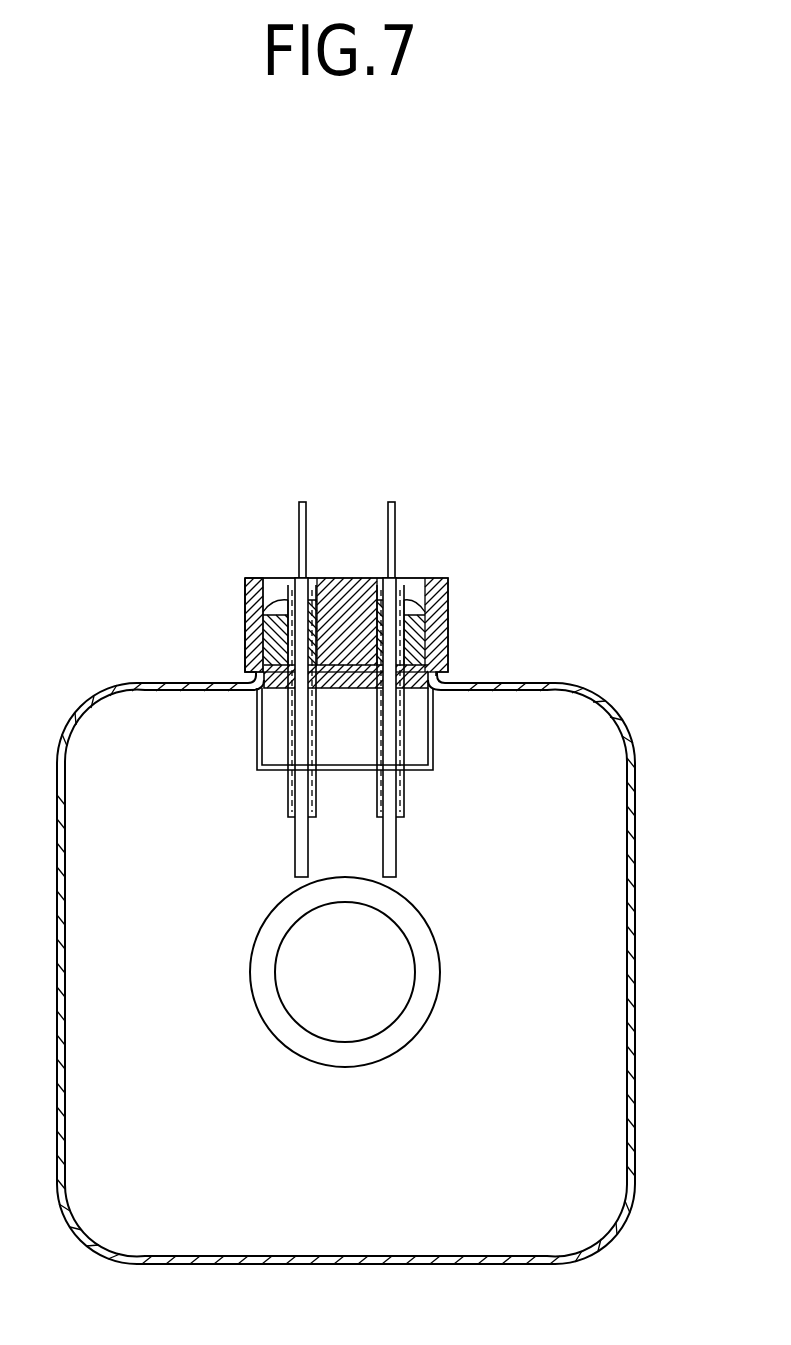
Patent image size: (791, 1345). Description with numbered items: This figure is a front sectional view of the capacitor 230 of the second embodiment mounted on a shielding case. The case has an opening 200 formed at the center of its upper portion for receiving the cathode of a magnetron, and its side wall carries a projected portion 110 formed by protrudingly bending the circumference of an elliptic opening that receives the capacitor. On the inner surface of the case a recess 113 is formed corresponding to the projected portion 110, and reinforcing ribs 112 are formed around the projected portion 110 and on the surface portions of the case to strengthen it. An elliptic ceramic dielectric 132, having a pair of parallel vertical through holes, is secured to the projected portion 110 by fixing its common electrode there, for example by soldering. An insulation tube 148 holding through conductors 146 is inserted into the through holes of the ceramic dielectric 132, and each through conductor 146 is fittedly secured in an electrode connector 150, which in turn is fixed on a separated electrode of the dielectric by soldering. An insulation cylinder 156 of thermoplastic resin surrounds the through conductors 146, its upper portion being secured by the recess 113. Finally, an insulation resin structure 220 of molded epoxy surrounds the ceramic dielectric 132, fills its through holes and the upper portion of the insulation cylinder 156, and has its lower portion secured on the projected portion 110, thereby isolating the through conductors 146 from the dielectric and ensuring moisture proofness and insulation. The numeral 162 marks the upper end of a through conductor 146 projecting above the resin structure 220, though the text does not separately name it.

The projected portion 110 is at (443, 672).
The reinforcing ribs 112 is at (187, 683).
The recess 113 is at (438, 690).
The ceramic dielectric 132 is at (247, 622).
The through conductor 146 is at (397, 858).
The insulation tube 148 is at (290, 800).
The electrode connector 150 is at (280, 583).
The insulation cylinder 156 is at (253, 713).
The terminal pin 162 is at (398, 515).
The opening 200 is at (385, 1020).
The insulation resin structure 220 is at (442, 595).
The capacitor 230 is at (543, 583).